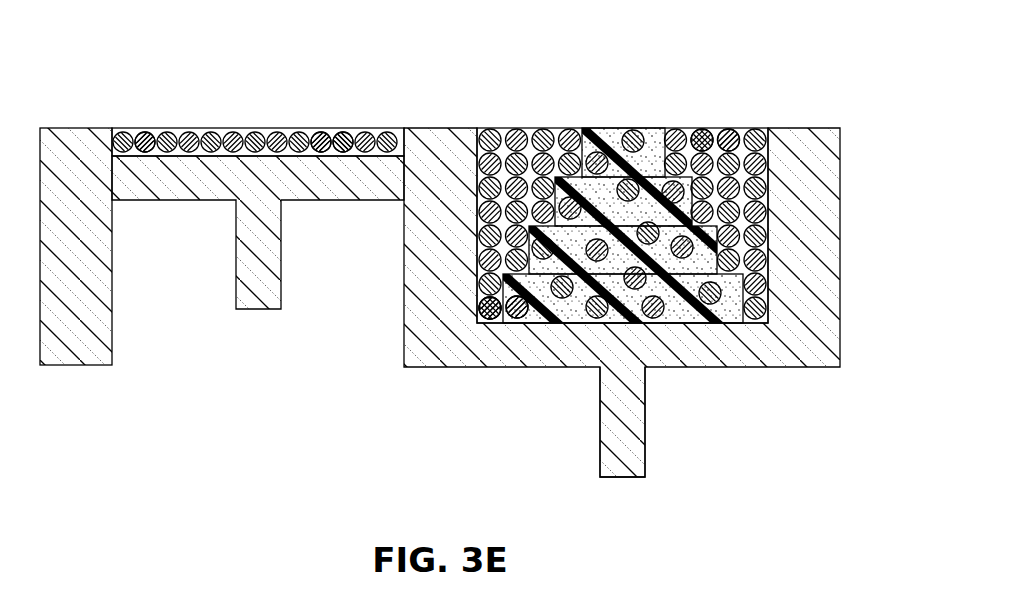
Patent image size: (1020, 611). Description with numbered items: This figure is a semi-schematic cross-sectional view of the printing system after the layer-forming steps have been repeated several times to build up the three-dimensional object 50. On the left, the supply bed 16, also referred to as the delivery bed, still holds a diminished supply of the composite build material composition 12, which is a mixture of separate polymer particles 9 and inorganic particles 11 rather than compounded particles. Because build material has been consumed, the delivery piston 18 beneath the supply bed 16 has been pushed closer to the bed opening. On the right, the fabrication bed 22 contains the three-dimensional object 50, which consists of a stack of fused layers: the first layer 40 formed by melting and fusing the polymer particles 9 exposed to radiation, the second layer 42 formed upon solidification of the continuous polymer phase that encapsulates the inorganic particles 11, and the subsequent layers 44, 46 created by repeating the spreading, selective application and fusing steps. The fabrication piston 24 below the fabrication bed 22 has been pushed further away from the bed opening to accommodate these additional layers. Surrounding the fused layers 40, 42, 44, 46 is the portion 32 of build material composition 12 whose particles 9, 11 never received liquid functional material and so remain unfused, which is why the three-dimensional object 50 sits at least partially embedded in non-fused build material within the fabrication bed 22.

The polymer particle 9 is at (343, 133).
The inorganic particle 11 is at (733, 137).
The composite build material composition 12 is at (493, 178).
The supply bed 16 is at (137, 137).
The delivery piston 18 is at (257, 285).
The fabrication bed 22 is at (477, 233).
The fabrication piston 24 is at (627, 428).
The portion/area 32 is at (487, 124).
The layer 40 is at (720, 300).
The second layer 42 is at (720, 243).
The subsequent layer 44 is at (687, 197).
The subsequent layer 46 is at (663, 150).
The 3D object 50 is at (623, 124).